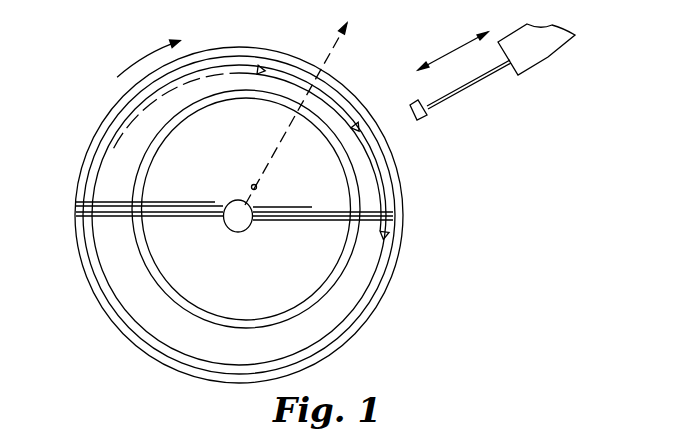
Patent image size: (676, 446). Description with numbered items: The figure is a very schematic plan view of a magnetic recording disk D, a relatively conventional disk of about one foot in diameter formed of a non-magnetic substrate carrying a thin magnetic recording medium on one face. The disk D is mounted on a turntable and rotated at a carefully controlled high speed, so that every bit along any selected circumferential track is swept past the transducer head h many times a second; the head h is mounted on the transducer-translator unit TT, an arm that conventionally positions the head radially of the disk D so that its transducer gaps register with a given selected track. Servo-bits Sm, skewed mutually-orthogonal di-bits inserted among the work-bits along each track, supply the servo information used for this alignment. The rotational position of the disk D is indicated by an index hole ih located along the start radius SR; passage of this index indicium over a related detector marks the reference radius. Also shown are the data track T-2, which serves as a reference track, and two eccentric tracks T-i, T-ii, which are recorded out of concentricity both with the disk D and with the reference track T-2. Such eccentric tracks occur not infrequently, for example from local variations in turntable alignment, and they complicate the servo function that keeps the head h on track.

The magnetic recording disk D is at (88, 141).
The reference track T-2 is at (387, 197).
The servo-bits Sm is at (387, 230).
The eccentric track T-i is at (163, 297).
The eccentric track T-ii is at (158, 270).
The start radius SR is at (314, 111).
The index hole ih is at (257, 188).
The transducer-translator unit TT is at (552, 57).
The transducer head h is at (428, 113).